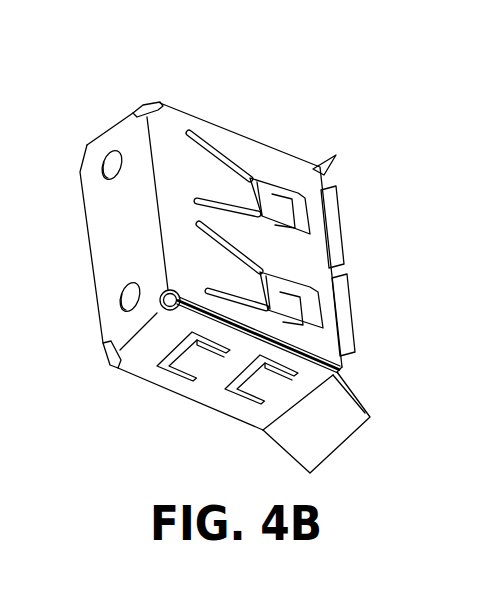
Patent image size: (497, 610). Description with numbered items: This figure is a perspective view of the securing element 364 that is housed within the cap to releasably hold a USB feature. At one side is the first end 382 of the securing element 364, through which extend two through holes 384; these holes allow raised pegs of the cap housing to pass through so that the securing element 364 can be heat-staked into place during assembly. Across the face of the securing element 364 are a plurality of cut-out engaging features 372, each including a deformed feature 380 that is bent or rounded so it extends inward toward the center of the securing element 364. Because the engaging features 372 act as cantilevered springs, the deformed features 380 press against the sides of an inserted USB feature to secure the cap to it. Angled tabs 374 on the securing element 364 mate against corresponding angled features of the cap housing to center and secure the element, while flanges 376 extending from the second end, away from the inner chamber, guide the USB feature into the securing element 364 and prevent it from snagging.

The securing element 364 is at (119, 76).
The engaging features 372 is at (214, 180).
The angled tabs 374 is at (328, 428).
The flanges 376 is at (347, 343).
The deformed feature 380 is at (290, 210).
The first end 382 is at (122, 216).
The through hole 384 is at (105, 163).